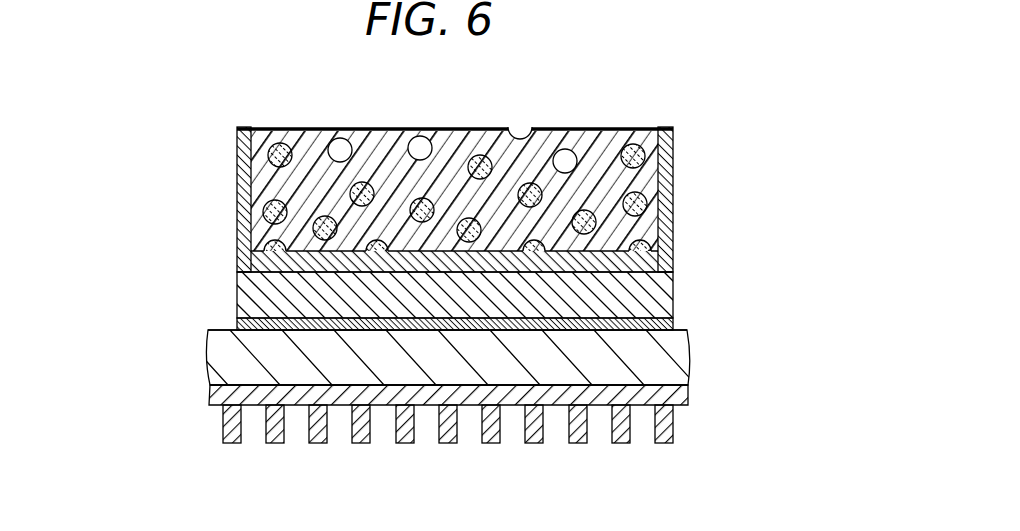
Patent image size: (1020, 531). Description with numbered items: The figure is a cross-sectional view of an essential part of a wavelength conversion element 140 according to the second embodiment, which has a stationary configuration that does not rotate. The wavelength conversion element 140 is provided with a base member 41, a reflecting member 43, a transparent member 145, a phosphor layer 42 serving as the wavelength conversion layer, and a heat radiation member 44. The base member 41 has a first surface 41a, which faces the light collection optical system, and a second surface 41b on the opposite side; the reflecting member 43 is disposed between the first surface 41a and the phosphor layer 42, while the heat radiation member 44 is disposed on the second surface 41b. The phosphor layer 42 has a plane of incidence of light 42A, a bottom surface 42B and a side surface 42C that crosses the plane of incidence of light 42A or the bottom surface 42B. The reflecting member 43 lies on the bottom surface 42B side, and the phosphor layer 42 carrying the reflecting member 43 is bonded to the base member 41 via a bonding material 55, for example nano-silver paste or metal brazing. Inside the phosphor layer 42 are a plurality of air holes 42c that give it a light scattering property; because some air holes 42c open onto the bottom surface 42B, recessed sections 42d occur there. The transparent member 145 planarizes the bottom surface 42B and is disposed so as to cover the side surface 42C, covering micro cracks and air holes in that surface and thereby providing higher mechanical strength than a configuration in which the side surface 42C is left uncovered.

The wavelength conversion element 140 is at (441, 259).
The phosphor layer 42 is at (453, 181).
The plane of incidence of light 42A is at (253, 127).
The bottom surface 42B is at (237, 270).
The side surface 42C is at (660, 157).
The air holes 42c is at (270, 150).
The recessed sections 42d is at (252, 250).
The transparent member 145 is at (358, 186).
The reflecting member 43 is at (658, 300).
The bonding material 55 is at (662, 323).
The base member 41 is at (441, 359).
The first surface 41a is at (208, 332).
The second surface 41b is at (212, 403).
The heat radiation member 44 is at (672, 428).